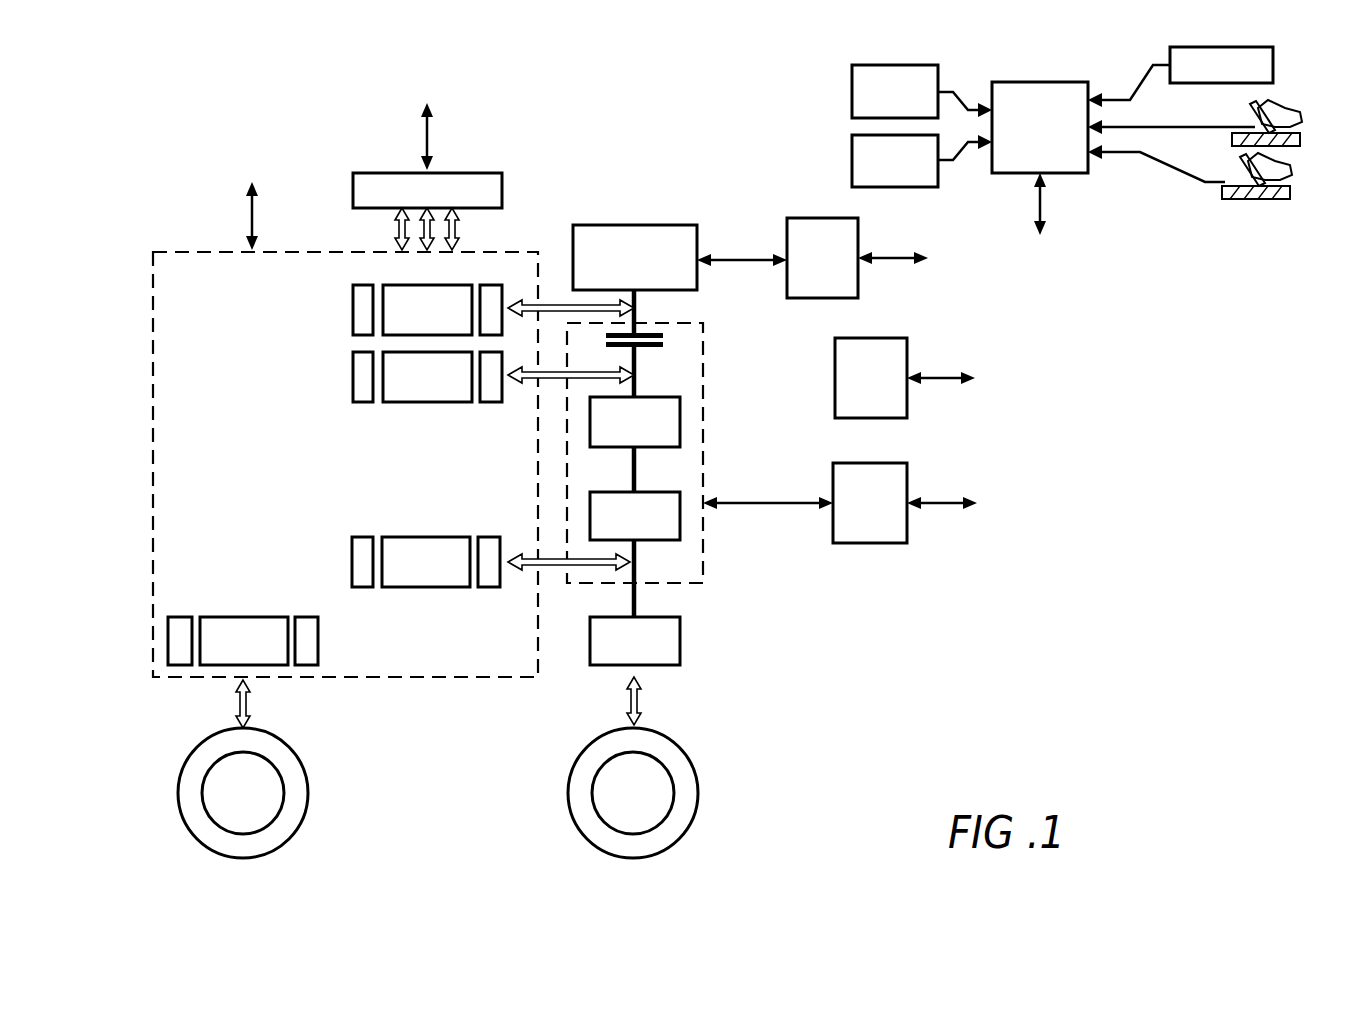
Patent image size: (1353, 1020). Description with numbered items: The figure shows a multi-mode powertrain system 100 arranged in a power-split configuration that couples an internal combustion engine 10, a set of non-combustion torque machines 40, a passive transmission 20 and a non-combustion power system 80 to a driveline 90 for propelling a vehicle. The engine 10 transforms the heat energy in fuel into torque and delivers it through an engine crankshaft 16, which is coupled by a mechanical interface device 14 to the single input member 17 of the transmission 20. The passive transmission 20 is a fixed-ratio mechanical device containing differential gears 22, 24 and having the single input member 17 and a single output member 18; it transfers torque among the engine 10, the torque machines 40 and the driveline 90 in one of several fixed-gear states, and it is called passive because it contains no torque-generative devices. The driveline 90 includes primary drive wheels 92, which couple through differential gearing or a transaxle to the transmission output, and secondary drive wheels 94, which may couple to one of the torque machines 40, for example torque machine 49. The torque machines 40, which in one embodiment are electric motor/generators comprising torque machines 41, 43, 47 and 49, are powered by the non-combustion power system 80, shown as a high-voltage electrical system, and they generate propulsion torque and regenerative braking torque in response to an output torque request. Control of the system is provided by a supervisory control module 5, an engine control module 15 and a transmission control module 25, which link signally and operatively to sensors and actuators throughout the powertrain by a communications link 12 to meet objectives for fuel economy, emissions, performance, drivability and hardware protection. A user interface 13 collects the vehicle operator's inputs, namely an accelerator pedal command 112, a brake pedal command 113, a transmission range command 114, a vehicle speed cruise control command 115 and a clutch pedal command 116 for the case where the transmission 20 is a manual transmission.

The multi-mode powertrain system 100 is at (633, 188).
The non-combustion torque machine(s) 40 is at (185, 238).
The passive transmission 20 is at (705, 452).
The internal combustion engine 10 is at (649, 270).
The engine crankshaft 16 is at (637, 298).
The mechanical interface device 14 is at (650, 349).
The single input member 17 is at (637, 365).
The differential gear 22 is at (649, 435).
The differential gear 24 is at (649, 529).
The single output member 18 is at (637, 595).
The driveline 90 is at (649, 654).
The primary drive wheels 92 is at (647, 806).
The secondary drive wheels 94 is at (257, 806).
The non-combustion power system 80 is at (441, 203).
The torque machine 41 is at (441, 323).
The torque machine 43 is at (441, 390).
The torque machine 47 is at (440, 575).
The torque machine 49 is at (258, 654).
The engine control module 15 is at (836, 271).
The supervisory control module 5 is at (878, 391).
The transmission control module 25 is at (884, 516).
The user interface 13 is at (1054, 140).
The vehicle speed cruise control command 115 is at (913, 104).
The clutch pedal command 116 is at (913, 174).
The transmission range command 114 is at (1239, 78).
The brake pedal command 113 is at (1255, 120).
The accelerator pedal command 112 is at (1246, 173).
The communications link 12 is at (463, 150).